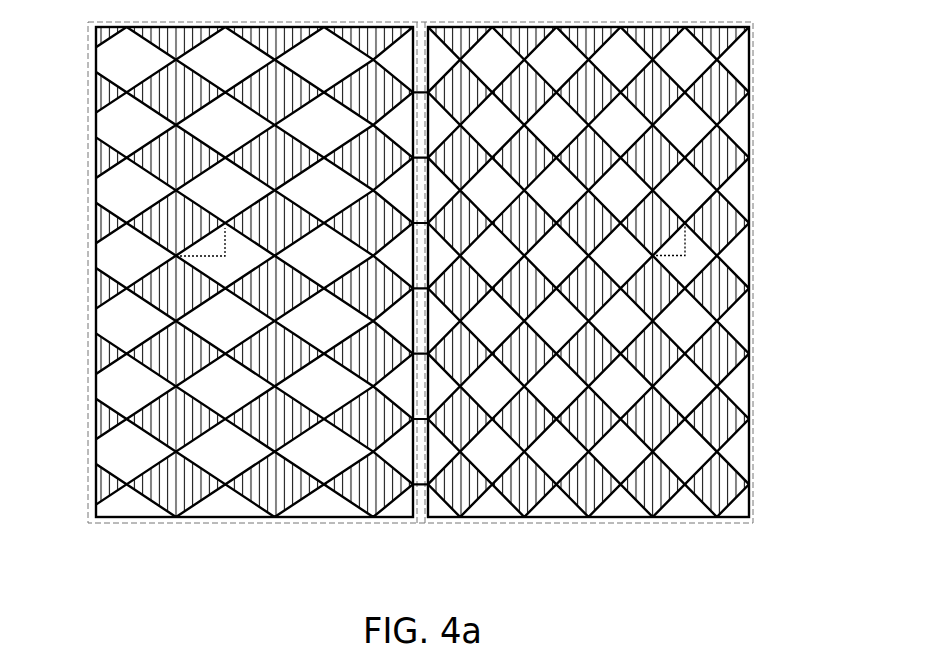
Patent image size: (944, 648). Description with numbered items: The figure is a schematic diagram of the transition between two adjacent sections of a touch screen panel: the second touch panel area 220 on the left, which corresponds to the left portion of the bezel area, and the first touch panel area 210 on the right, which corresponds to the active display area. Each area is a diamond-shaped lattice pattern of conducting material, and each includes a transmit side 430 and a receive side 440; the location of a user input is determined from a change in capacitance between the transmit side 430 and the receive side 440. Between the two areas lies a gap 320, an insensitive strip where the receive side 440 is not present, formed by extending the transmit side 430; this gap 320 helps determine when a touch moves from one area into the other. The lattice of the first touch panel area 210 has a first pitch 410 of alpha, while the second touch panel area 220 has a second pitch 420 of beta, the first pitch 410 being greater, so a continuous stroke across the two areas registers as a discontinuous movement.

The first touch panel area 210 is at (615, 324).
The second touch panel area 220 is at (218, 324).
The gap 320 is at (422, 530).
The first pitch 410 is at (697, 262).
The second pitch 420 is at (222, 262).
The transmit side 430 is at (102, 126).
The receive side 440 is at (102, 160).